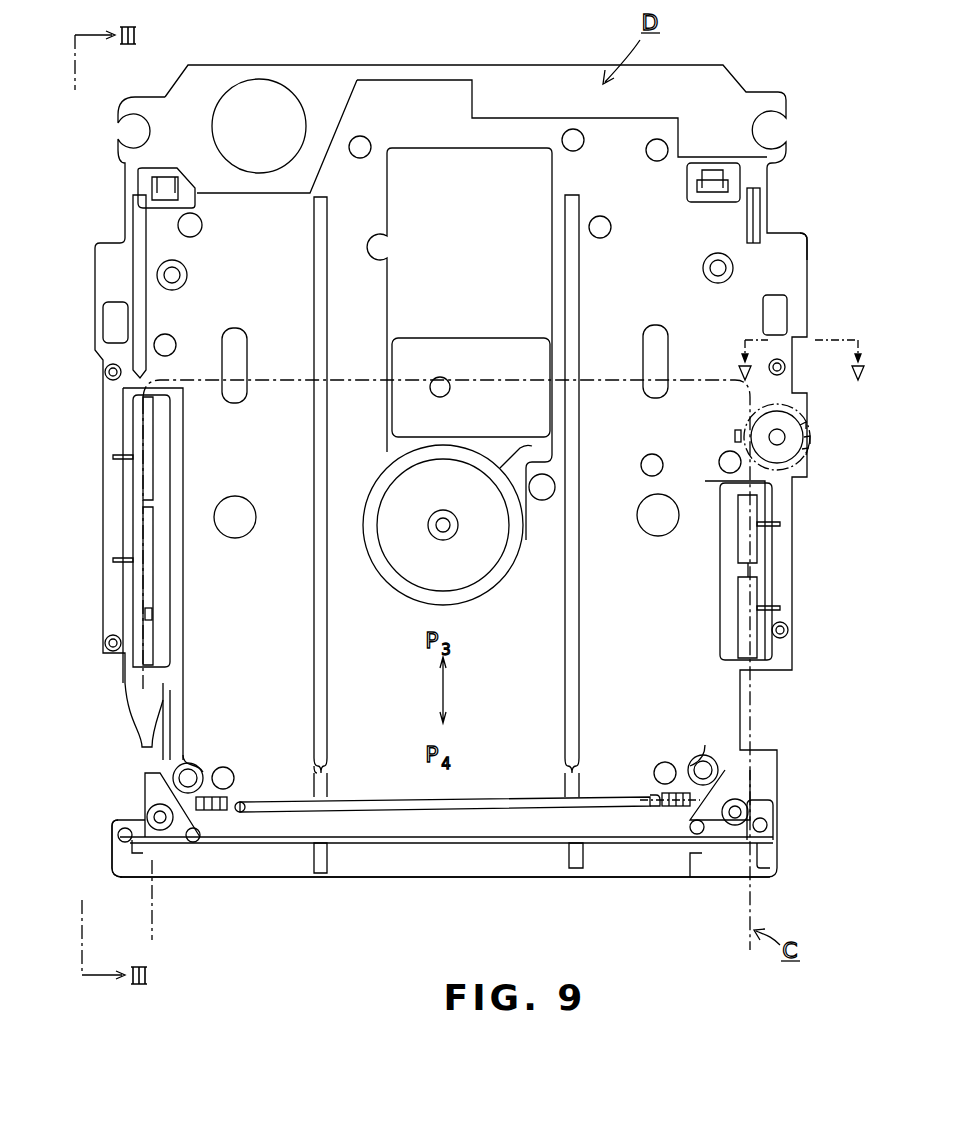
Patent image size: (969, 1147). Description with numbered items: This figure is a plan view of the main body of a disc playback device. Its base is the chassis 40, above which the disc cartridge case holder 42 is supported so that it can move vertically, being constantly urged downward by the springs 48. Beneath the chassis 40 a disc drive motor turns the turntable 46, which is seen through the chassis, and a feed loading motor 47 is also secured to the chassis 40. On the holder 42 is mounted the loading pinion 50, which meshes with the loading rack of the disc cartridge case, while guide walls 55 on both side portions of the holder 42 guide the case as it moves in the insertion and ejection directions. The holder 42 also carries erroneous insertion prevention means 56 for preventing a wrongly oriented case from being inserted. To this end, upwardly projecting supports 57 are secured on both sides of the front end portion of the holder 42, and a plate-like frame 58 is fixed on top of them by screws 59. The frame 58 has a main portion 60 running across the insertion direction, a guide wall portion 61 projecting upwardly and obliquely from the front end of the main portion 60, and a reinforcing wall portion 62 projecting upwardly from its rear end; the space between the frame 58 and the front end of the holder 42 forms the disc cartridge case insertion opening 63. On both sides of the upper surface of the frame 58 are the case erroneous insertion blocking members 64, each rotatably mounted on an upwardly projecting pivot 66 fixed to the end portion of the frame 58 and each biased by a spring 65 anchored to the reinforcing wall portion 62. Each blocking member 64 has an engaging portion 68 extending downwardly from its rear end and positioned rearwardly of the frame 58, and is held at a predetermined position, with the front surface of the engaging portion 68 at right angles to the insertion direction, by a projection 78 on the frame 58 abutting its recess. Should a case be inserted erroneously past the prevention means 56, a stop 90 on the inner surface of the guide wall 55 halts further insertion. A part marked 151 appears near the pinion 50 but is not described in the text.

The chassis 40 is at (738, 78).
The disc cartridge case holder 42 is at (807, 250).
The turntable 46 is at (493, 465).
The feed loading motor 47 is at (243, 88).
The springs 48 is at (105, 372).
The loading pinion 50 is at (800, 437).
The guide walls 55 is at (143, 520).
The erroneous insertion prevention means 56 is at (136, 784).
The supports 57 is at (120, 866).
The frame 58 is at (540, 826).
The screws 59 is at (118, 830).
The main portion 60 is at (440, 826).
The guide wall portion 61 is at (488, 846).
The reinforcing wall portion 62 is at (508, 797).
The disc cartridge case insertion opening 63 is at (372, 845).
The case erroneous insertion blocking members 64 is at (162, 835).
The springs 65 is at (222, 812).
The pivot 66 is at (157, 830).
The engaging portion 68 is at (165, 768).
The projection 78 is at (195, 842).
The stop 90 is at (153, 614).
The stopper 151 is at (738, 435).